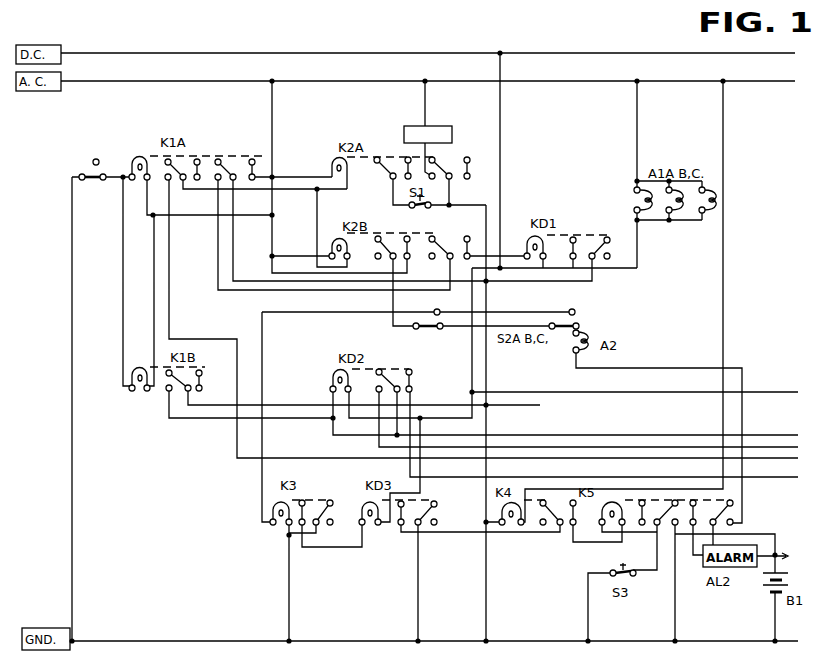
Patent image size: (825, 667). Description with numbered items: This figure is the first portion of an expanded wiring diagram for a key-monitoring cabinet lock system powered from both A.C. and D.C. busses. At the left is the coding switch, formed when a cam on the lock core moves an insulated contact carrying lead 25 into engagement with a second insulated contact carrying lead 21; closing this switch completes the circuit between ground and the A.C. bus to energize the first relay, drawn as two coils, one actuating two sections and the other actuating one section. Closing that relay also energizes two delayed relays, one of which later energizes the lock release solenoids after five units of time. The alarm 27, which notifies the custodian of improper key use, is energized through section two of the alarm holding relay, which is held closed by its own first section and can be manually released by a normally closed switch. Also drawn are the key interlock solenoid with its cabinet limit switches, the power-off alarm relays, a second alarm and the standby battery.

The lead 21 is at (73, 242).
The lead 25 is at (114, 172).
The alarm 27 is at (438, 127).